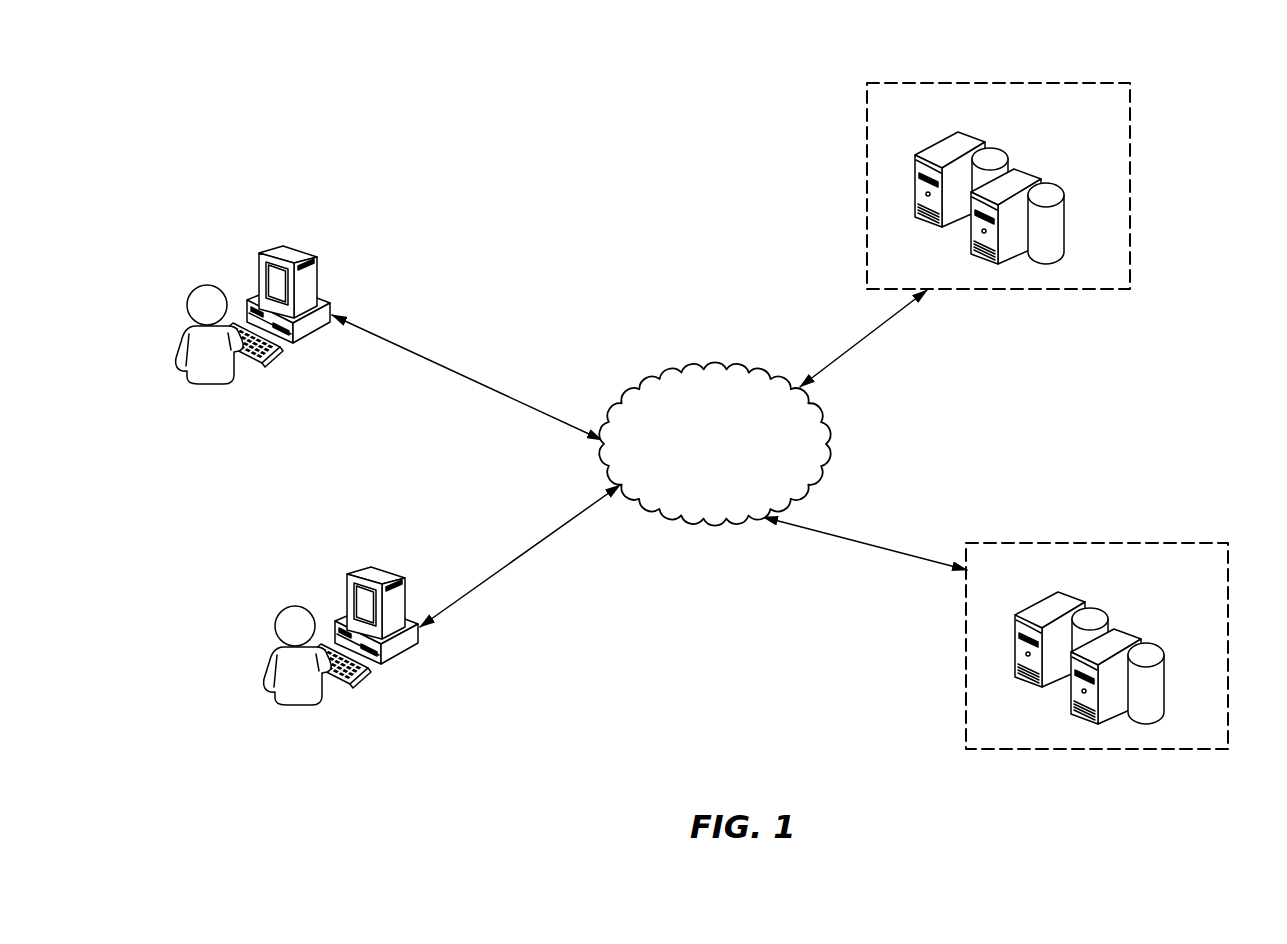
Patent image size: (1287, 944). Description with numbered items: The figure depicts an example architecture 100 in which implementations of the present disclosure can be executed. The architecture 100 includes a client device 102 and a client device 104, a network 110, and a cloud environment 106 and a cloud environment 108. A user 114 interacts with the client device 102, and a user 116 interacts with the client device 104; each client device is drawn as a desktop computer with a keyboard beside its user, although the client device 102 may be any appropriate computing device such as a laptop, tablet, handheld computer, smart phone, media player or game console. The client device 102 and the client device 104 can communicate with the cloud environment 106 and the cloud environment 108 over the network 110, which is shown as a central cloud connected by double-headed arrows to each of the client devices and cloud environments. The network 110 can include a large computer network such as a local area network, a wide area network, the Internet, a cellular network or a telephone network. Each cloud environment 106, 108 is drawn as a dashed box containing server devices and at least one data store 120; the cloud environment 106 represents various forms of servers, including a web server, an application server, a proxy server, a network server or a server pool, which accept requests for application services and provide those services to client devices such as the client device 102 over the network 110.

The architecture 100 is at (567, 133).
The client device 102 is at (266, 253).
The client device 104 is at (354, 574).
The cloud environment 106 is at (1135, 185).
The cloud environment 108 is at (966, 647).
The network 110 is at (715, 369).
The user 114 is at (210, 384).
The user 116 is at (298, 705).
The data store 120 is at (1011, 158).